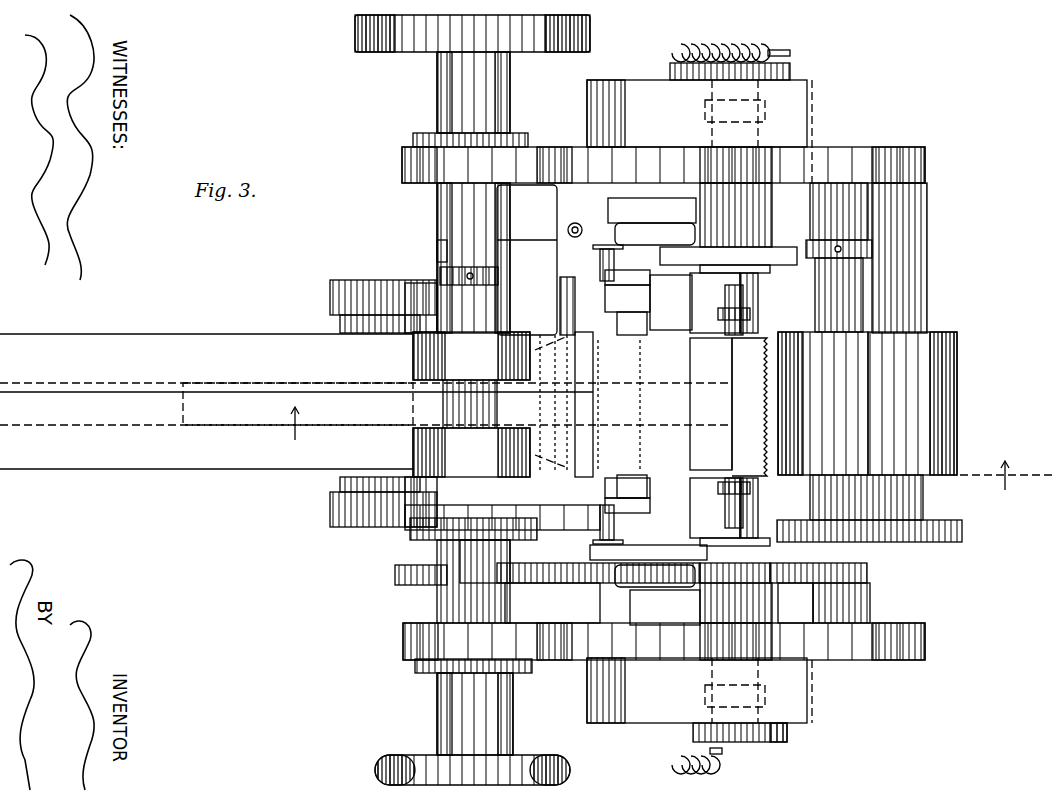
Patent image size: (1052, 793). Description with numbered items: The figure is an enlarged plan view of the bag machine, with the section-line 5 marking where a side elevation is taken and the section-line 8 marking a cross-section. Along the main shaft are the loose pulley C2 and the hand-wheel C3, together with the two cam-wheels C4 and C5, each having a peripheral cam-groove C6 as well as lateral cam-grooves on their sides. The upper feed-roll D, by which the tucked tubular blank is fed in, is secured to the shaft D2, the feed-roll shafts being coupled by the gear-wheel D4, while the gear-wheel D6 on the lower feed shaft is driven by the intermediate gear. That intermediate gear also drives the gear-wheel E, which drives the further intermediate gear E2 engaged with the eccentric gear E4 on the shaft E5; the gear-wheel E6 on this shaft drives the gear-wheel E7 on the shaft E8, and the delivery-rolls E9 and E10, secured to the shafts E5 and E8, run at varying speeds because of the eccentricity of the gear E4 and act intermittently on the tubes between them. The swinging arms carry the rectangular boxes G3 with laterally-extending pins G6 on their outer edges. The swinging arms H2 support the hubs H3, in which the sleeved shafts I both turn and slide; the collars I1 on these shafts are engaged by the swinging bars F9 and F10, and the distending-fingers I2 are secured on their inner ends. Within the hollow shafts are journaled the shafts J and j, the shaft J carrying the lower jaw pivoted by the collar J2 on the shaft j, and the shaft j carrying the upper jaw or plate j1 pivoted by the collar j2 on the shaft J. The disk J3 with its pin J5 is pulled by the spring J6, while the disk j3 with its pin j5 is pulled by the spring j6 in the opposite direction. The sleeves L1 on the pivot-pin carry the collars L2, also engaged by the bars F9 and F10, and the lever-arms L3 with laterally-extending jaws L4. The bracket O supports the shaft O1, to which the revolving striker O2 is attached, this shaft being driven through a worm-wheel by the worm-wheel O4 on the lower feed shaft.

The section-line 5 is at (526, 412).
The section-line 8 is at (819, 401).
The loose pulley C2 is at (472, 33).
The hand-wheel C3 is at (472, 770).
The cam-wheel C4 is at (330, 515).
The cam-wheel C5 is at (330, 300).
The peripheral cam-groove C6 is at (340, 480).
The upper feed-roll D is at (471, 404).
The shaft D2 is at (439, 405).
The gear-wheel D4 is at (410, 540).
The gear-wheel D6 is at (395, 583).
The gear-wheel E is at (568, 583).
The intermediate gear E2 is at (677, 626).
The eccentric gear E4 is at (809, 584).
The shaft E5 is at (839, 257).
The gear-wheel E6 is at (810, 510).
The gear-wheel E7 is at (962, 532).
The shaft E8 is at (905, 322).
The delivery-roll E9 is at (823, 403).
The delivery-roll E10 is at (912, 403).
The laterally-swinging bar F9 is at (728, 257).
The laterally-swinging bar F10 is at (648, 551).
The rectangular box G3 is at (697, 401).
The laterally-extending pin G6 is at (790, 735).
The swinging arm H2 is at (654, 411).
The hub H3 is at (736, 403).
The sleeved shaft I is at (740, 285).
The collar I1 is at (770, 272).
The distending-finger I2 is at (727, 405).
The shaft J is at (743, 300).
The collar J2 is at (750, 314).
The disk J3 is at (748, 70).
The projecting pin J5 is at (800, 53).
The spring J6 is at (703, 55).
The shaft j is at (743, 508).
The upper jaw or plate j1 is at (728, 407).
The collar j2 is at (750, 488).
The disk j3 is at (770, 745).
The pin j5 is at (722, 752).
The spring j6 is at (690, 775).
The sleeve L1 is at (627, 402).
The collar L2 is at (597, 548).
The lever-arm L3 is at (627, 399).
The jaw L4 is at (632, 404).
The bracket O is at (527, 260).
The shaft O1 is at (540, 238).
The revolving striker O2 is at (587, 404).
The worm-wheel O4 is at (437, 250).